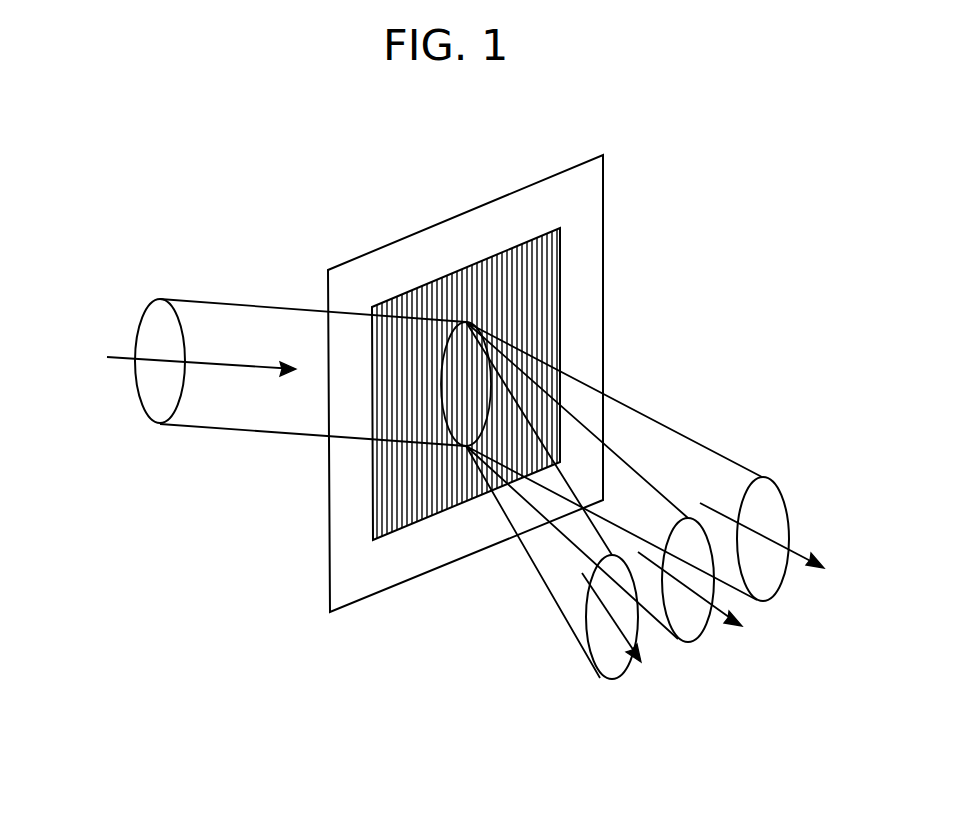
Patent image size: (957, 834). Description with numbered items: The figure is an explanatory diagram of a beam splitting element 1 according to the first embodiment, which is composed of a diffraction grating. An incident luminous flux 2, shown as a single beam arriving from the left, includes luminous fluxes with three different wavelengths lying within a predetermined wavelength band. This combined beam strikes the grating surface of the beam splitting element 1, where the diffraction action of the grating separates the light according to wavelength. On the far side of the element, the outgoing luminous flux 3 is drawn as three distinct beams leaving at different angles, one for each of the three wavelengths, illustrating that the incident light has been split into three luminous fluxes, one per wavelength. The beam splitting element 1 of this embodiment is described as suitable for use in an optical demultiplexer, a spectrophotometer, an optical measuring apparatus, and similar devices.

The beam splitting element 1 is at (553, 280).
The incident luminous flux 2 is at (105, 265).
The outgoing luminous flux 3 is at (870, 543).